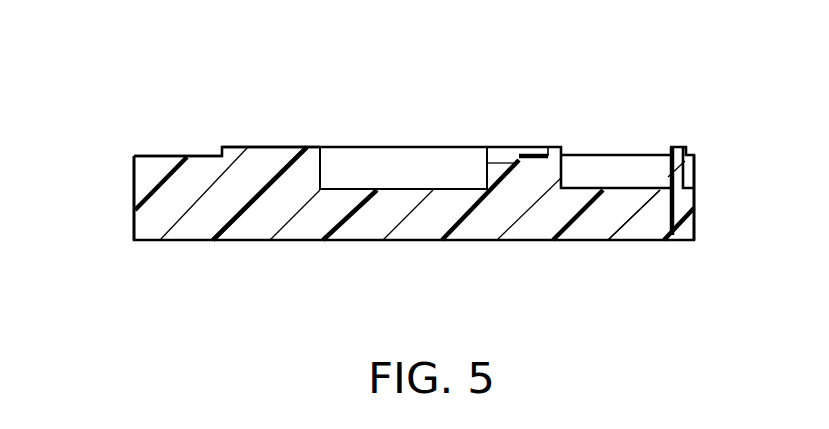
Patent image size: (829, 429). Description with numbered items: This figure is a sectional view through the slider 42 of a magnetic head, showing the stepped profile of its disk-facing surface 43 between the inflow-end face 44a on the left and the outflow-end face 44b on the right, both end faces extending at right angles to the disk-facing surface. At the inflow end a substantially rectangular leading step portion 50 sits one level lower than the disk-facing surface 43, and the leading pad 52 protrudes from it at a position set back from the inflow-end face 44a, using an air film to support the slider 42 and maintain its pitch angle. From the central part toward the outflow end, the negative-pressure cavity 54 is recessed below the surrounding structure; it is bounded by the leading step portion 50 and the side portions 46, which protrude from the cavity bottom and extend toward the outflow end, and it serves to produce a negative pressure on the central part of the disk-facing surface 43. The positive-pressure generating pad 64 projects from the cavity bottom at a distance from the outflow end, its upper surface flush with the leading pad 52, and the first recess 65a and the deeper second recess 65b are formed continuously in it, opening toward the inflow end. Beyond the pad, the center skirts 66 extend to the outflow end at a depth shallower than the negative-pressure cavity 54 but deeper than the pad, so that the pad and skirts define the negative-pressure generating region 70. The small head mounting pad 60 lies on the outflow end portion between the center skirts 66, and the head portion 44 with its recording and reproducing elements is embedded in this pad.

The slider 42 is at (482, 217).
The disk-facing surface 43 is at (307, 140).
The head portion 44 is at (695, 208).
The inflow-end face 44a is at (133, 200).
The outflow-end face 44b is at (695, 196).
The side portion 46 is at (437, 147).
The leading step portion 50 is at (182, 183).
The leading pad 52 is at (265, 158).
The negative-pressure cavity 54 is at (373, 183).
The head mounting pad 60 is at (683, 147).
The positive-pressure generating pad 64 is at (553, 147).
The first recess 65a is at (533, 155).
The second recess 65b is at (502, 160).
The center skirt 66 is at (613, 155).
The negative-pressure generating region 70 is at (614, 183).